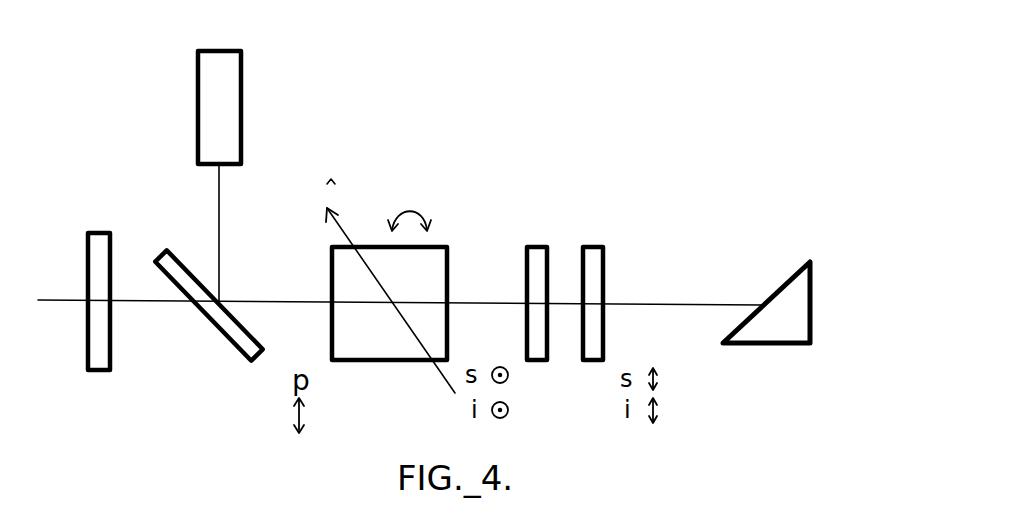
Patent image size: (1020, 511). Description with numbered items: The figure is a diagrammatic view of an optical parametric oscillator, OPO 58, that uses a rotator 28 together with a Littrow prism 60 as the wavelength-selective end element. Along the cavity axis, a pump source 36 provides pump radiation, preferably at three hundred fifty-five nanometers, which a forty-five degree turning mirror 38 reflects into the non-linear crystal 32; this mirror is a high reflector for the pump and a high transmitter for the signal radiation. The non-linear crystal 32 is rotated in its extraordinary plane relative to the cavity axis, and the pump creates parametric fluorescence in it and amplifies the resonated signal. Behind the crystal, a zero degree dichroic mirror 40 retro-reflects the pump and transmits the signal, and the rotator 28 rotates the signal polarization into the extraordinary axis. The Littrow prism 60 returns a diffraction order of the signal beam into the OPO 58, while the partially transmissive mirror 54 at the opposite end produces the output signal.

The pump source 36 is at (232, 85).
The partially transmissive mirror 54 is at (102, 348).
The 45° turning mirror 38 is at (250, 360).
The non-linear crystal 32 is at (407, 360).
The mirror 40 is at (535, 360).
The rotator 28 is at (592, 257).
The optical parametric oscillator 58 is at (575, 128).
The Littrow prism 60 is at (782, 343).